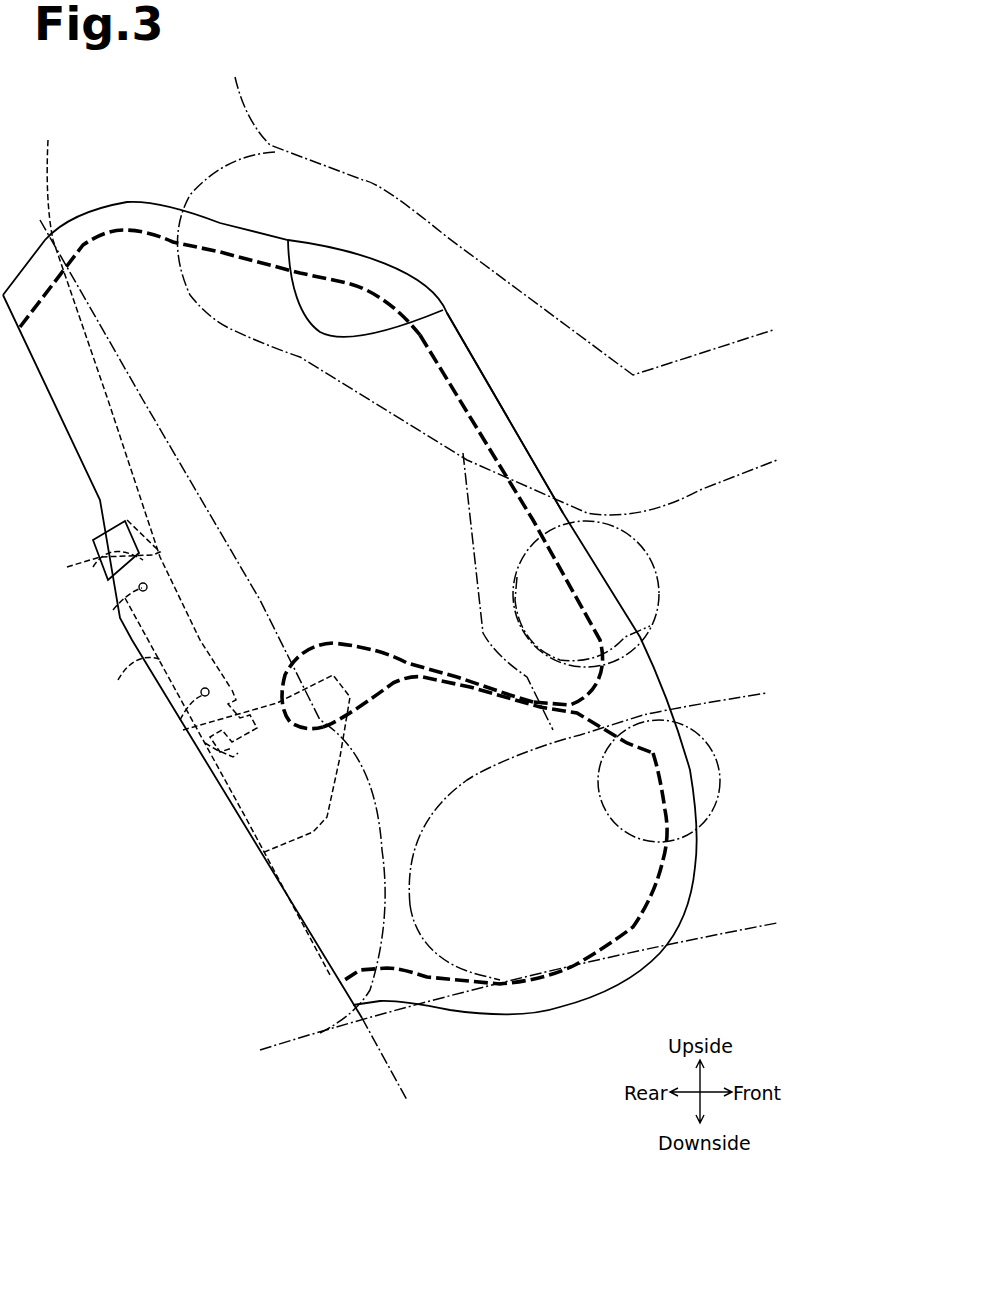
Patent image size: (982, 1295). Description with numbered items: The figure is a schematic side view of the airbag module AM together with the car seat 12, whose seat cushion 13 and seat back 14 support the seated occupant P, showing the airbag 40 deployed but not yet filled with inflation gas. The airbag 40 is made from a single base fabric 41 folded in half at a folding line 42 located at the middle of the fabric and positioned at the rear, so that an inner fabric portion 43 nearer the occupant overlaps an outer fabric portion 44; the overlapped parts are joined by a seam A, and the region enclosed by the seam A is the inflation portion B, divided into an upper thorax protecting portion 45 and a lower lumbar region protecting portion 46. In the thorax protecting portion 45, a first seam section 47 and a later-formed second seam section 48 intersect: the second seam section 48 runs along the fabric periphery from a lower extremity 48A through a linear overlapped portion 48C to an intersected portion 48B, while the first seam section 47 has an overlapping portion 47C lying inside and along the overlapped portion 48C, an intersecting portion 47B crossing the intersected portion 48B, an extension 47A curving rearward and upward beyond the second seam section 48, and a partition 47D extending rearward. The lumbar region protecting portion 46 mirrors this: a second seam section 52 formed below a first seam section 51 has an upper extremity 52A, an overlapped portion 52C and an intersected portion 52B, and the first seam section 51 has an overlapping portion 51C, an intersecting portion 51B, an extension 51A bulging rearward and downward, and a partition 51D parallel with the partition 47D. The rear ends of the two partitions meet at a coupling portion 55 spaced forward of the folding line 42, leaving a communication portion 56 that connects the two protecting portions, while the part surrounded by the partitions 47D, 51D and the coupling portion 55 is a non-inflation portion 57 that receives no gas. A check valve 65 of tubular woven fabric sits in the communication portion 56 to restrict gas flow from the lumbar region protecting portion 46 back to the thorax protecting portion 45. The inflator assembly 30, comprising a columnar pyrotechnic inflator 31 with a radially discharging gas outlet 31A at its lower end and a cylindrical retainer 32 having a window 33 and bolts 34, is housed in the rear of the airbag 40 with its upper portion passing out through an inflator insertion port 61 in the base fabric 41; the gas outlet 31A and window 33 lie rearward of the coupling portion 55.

The car seat 12 is at (408, 592).
The seat cushion 13 is at (723, 933).
The seat back 14 is at (155, 423).
The inflator assembly 30 is at (179, 786).
The inflator 31 is at (241, 688).
The gas outlet 31A is at (250, 702).
The retainer 32 is at (153, 650).
The window 33 is at (230, 743).
The bolts 34 is at (123, 617).
The airbag 40 is at (513, 430).
The base fabric 41 is at (291, 371).
The folding line 42 is at (80, 547).
The inner fabric portion 43 is at (428, 305).
The outer fabric portion 44 is at (445, 327).
The thorax protecting portion 45 is at (320, 507).
The lumbar region protecting portion 46 is at (505, 897).
The first seam section 47 is at (387, 635).
The extension 47A is at (573, 570).
The intersecting portion 47B is at (577, 560).
The overlapping portion 47C is at (580, 608).
The partition 47D is at (450, 680).
The second seam section 48 is at (462, 432).
The extremity 48A is at (562, 612).
The intersected portion 48B is at (492, 566).
The overlapped portion 48C is at (577, 593).
The first seam section 51 is at (428, 694).
The extension 51A is at (665, 807).
The intersecting portion 51B is at (663, 810).
The overlapping portion 51C is at (653, 782).
The partition 51D is at (490, 695).
The second seam section 52 is at (524, 963).
The extremity 52A is at (650, 763).
The intersected portion 52B is at (567, 825).
The overlapped portion 52C is at (657, 800).
The coupling portion 55 is at (362, 708).
The communication portion 56 is at (298, 774).
The non-inflation portion 57 is at (377, 687).
The inflator insertion port 61 is at (110, 567).
The check valve 65 is at (312, 832).